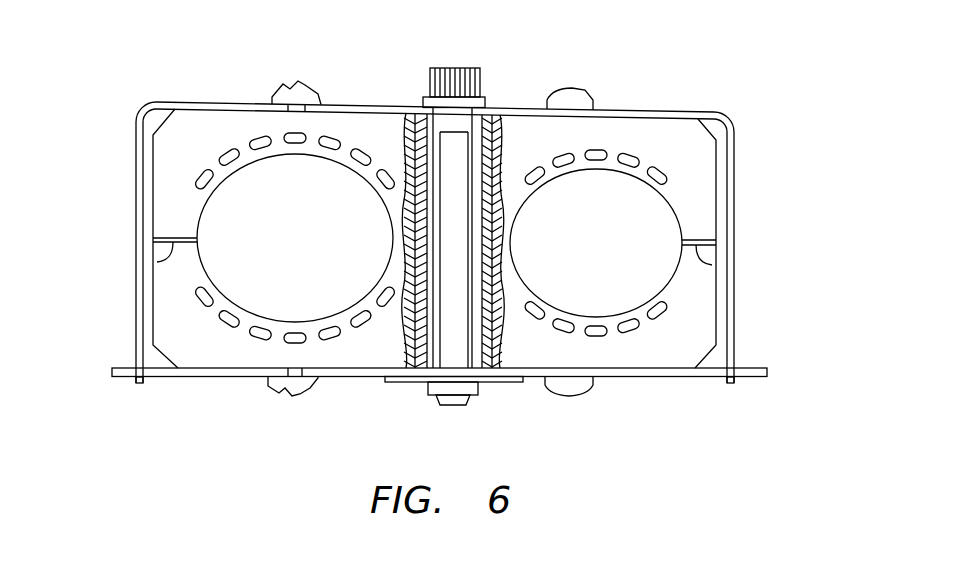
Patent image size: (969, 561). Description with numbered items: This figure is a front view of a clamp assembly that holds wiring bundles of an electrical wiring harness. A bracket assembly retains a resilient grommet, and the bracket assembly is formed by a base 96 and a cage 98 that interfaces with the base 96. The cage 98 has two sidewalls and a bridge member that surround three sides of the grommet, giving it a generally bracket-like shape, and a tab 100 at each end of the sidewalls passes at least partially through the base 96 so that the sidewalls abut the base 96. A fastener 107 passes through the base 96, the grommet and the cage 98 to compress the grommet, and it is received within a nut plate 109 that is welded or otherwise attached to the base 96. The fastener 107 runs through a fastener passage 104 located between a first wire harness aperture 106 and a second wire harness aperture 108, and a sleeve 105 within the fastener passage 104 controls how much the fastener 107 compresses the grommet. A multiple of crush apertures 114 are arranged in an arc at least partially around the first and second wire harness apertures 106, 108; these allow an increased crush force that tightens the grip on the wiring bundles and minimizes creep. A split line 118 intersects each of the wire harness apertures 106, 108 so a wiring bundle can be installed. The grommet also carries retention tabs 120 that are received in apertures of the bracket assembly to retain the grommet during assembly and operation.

The base 96 is at (647, 378).
The cage 98 is at (730, 197).
The tab 100 is at (139, 384).
The fastener passage 104 is at (499, 140).
The sleeve 105 is at (413, 135).
The first wire harness aperture 106 is at (314, 245).
The fastener 107 is at (453, 143).
The second wire harness aperture 108 is at (613, 252).
The nut plate 109 is at (443, 388).
The crush apertures 114 is at (632, 155).
The split line 118 is at (157, 262).
The retention tabs 120 is at (284, 93).